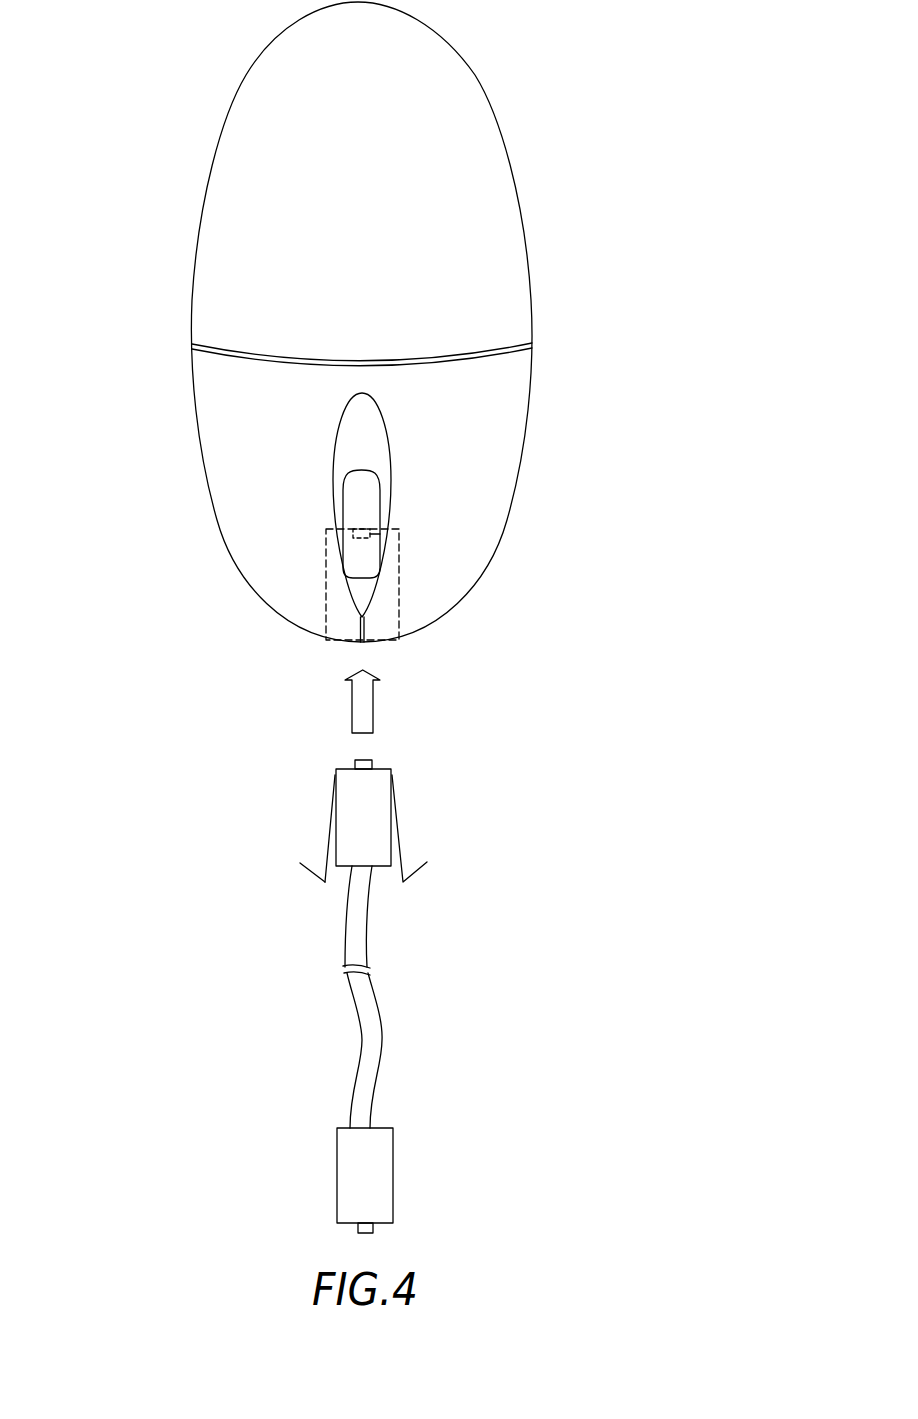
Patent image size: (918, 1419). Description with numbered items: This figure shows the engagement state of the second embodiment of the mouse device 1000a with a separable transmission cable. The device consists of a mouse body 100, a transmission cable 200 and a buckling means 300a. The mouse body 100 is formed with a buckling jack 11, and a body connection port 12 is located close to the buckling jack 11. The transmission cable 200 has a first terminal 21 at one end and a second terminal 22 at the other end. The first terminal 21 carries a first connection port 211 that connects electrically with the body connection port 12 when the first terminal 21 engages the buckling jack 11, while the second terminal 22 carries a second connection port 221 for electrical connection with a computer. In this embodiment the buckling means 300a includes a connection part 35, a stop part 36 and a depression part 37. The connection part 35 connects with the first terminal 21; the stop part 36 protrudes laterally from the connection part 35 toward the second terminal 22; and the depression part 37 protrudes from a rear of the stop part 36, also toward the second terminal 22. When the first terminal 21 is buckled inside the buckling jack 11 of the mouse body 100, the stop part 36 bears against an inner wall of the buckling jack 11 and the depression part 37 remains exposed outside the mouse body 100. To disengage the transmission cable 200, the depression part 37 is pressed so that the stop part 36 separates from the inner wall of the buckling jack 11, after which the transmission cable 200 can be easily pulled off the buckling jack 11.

The mouse device 1000a is at (637, 122).
The mouse body 100 is at (492, 153).
The buckling jack 11 is at (393, 613).
The body connection port 12 is at (387, 537).
The buckling means 300a is at (182, 776).
The first connection port 211 is at (372, 760).
The first terminal 21 is at (382, 818).
The connection part 35 is at (327, 772).
The stop part 36 is at (328, 817).
The depression part 37 is at (310, 877).
The transmission cable 200 is at (357, 923).
The second terminal 22 is at (385, 1177).
The second connection port 221 is at (375, 1228).